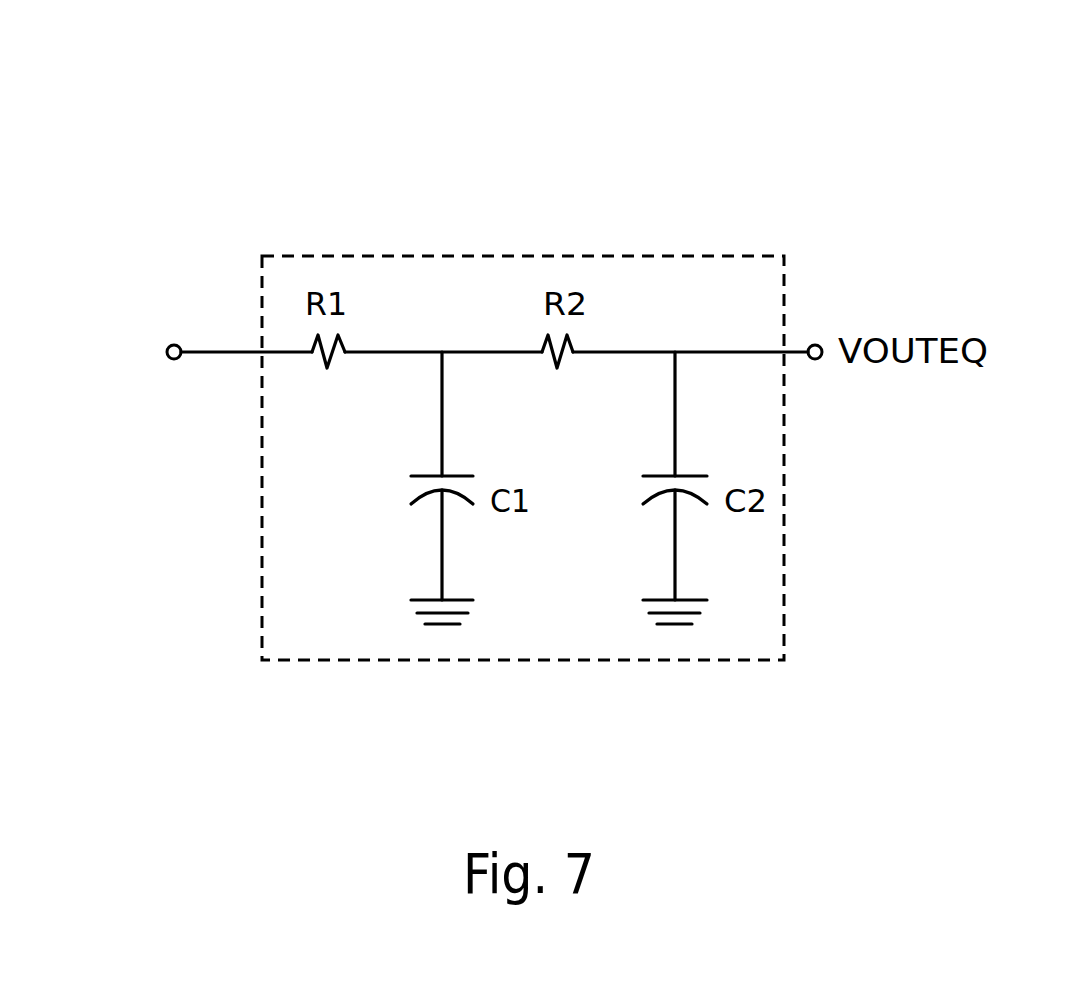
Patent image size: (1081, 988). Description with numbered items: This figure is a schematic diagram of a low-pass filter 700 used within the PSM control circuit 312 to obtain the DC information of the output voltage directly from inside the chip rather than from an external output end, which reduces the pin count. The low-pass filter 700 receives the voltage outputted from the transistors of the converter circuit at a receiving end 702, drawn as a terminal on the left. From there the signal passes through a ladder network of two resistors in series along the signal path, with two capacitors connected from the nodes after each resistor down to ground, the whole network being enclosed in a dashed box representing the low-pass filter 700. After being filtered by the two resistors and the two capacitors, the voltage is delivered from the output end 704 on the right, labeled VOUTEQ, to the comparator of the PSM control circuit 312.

The PSM control circuit 312 is at (888, 116).
The low-pass filter 700 is at (368, 255).
The receiving end 702 is at (177, 346).
The output end 704 is at (816, 345).